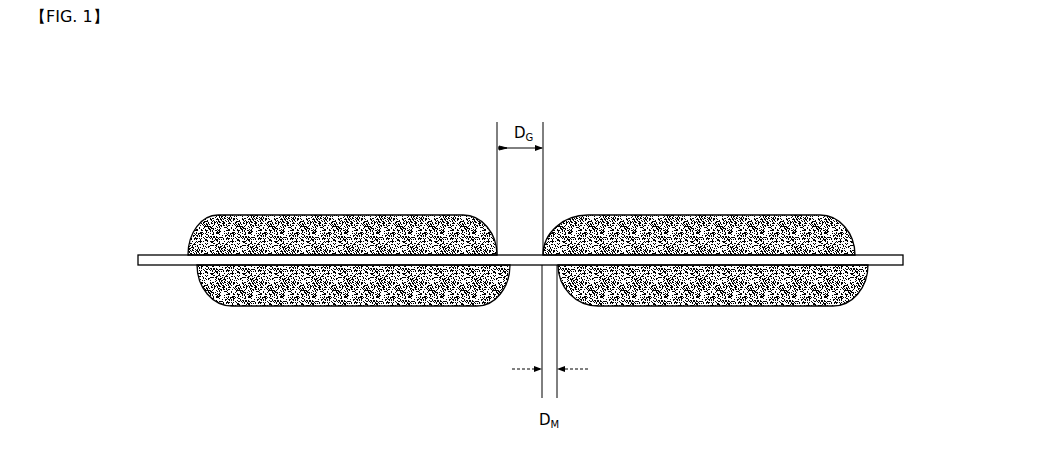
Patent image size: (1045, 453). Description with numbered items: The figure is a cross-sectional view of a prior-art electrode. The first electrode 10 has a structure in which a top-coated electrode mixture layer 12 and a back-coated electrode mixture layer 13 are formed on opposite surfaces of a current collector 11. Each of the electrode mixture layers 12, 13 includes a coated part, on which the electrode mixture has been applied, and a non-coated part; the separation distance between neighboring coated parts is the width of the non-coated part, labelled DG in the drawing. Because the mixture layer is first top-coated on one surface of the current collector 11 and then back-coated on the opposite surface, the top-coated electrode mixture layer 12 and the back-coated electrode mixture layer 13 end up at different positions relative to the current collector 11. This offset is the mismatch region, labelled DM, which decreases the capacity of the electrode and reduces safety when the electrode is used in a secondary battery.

The first electrode 10 is at (157, 112).
The current collector 11 is at (882, 255).
The top-coated electrode mixture layer 12 is at (690, 215).
The back-coated electrode mixture layer 13 is at (718, 305).